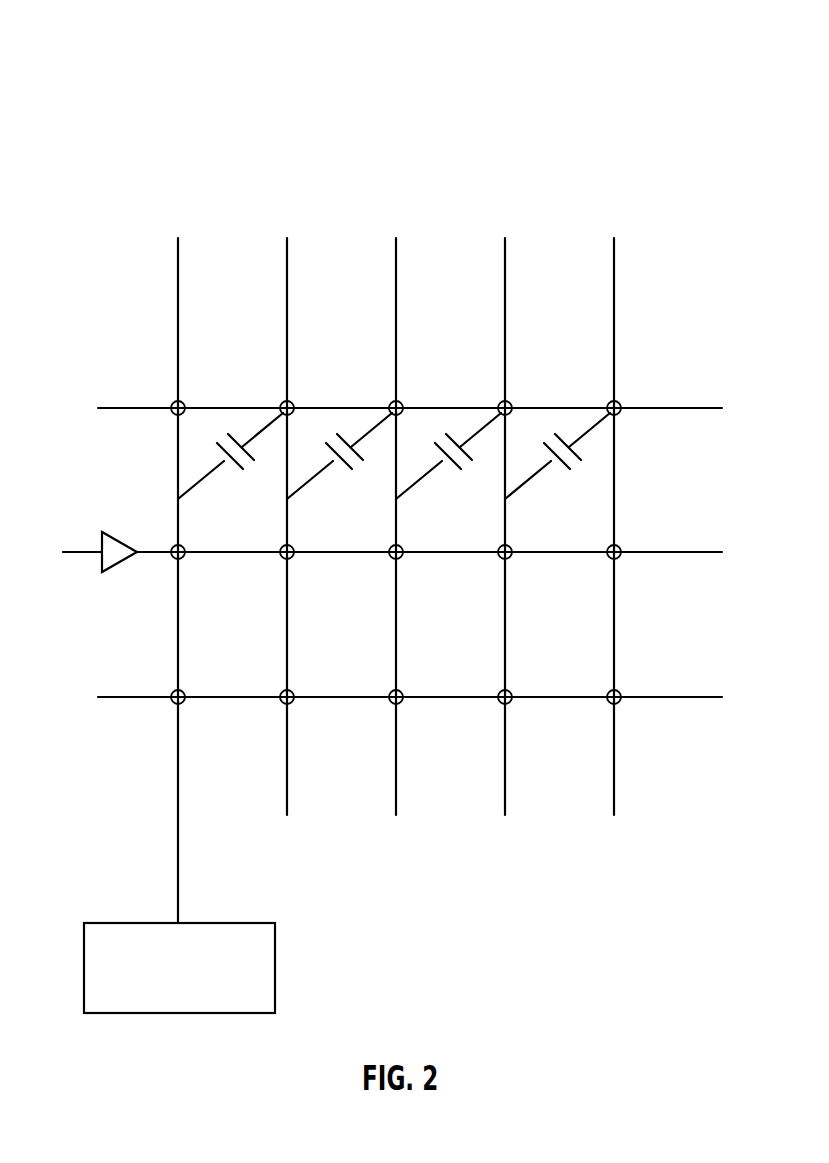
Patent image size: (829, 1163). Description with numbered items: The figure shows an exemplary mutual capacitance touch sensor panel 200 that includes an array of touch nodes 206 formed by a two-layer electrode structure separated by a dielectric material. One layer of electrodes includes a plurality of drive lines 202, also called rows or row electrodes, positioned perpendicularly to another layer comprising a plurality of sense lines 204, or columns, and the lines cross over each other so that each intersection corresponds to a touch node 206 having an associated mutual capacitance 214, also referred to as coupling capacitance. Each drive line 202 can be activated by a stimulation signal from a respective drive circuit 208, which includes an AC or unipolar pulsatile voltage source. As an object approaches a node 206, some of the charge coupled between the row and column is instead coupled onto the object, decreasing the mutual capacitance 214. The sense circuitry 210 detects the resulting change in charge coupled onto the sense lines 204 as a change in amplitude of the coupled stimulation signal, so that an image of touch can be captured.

The mutual capacitance touch sensor panel 200 is at (660, 128).
The drive line 202 is at (118, 407).
The sense line 204 is at (180, 270).
The touch node 206 is at (185, 403).
The drive circuit 208 is at (122, 560).
The sense circuitry 210 is at (208, 923).
The mutual capacitance 214 is at (202, 482).